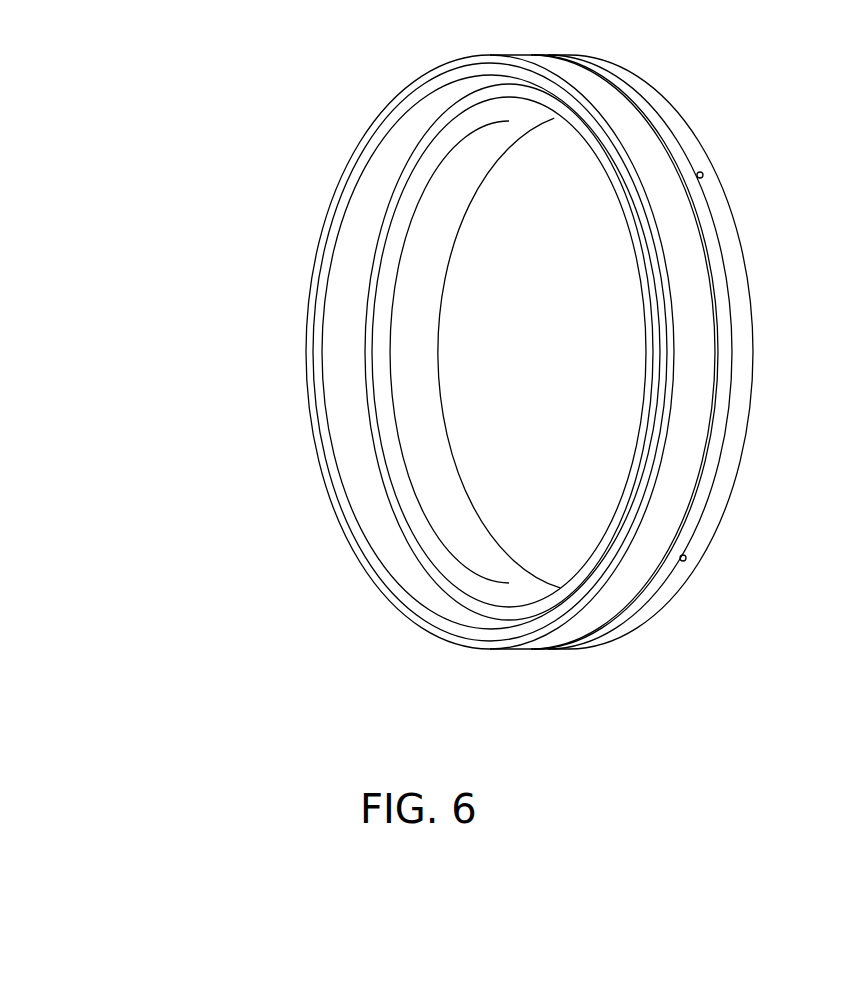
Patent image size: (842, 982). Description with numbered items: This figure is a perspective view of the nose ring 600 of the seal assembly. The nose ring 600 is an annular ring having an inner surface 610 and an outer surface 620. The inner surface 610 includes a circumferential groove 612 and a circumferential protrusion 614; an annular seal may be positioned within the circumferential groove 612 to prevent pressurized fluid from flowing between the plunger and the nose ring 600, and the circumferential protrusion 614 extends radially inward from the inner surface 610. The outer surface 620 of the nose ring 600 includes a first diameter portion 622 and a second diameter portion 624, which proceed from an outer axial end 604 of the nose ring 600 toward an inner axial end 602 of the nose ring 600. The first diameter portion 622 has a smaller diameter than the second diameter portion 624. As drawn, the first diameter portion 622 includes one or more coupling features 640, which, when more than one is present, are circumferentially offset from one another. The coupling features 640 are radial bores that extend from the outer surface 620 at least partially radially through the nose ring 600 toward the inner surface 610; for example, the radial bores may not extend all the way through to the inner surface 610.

The nose ring 600 is at (171, 653).
The inner axial end 602 is at (327, 227).
The outer axial end 604 is at (758, 289).
The inner surface 610 is at (337, 381).
The circumferential groove 612 is at (348, 470).
The circumferential protrusion 614 is at (417, 380).
The outer surface 620 is at (570, 73).
The first diameter portion 622 is at (697, 153).
The second diameter portion 624 is at (630, 130).
The coupling feature 640 is at (704, 173).